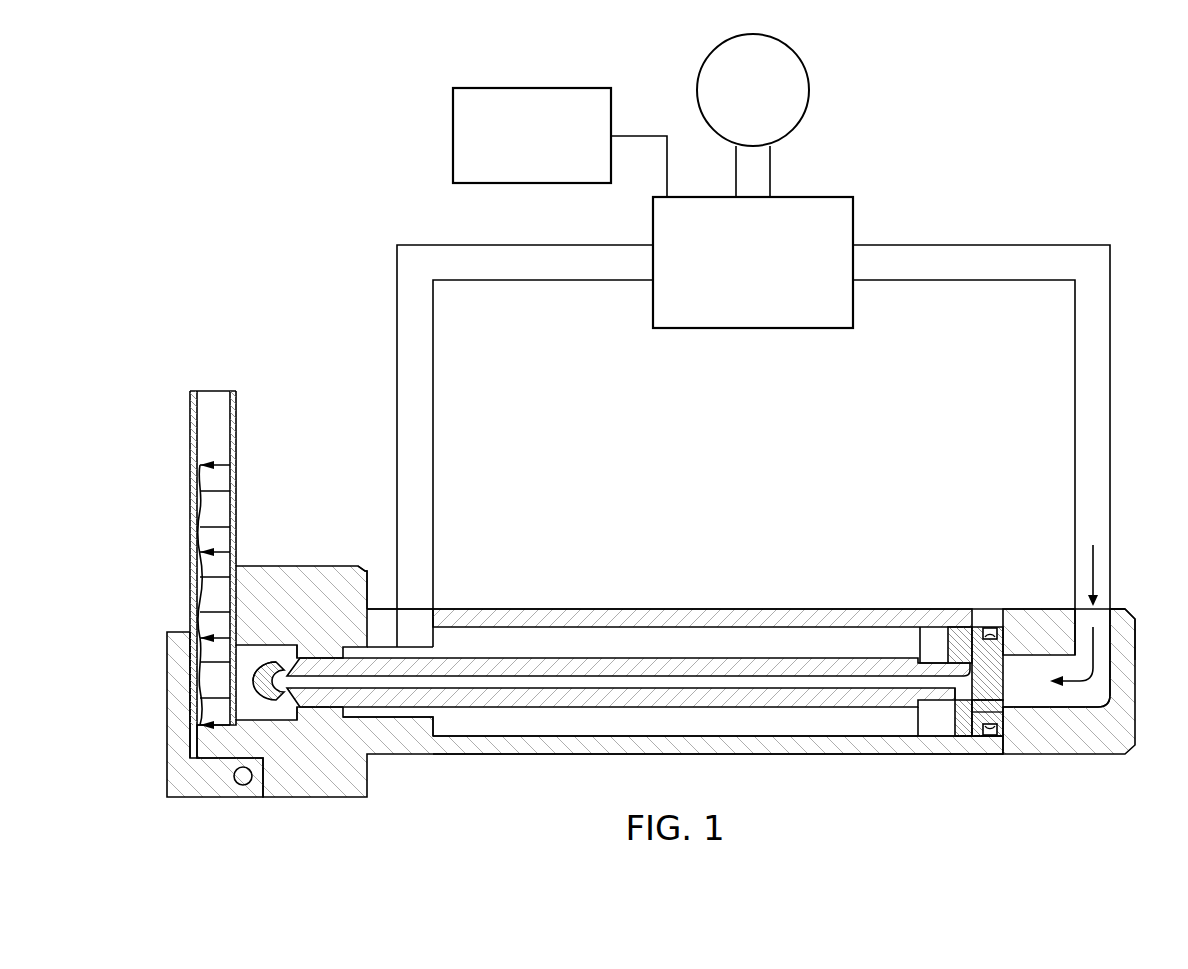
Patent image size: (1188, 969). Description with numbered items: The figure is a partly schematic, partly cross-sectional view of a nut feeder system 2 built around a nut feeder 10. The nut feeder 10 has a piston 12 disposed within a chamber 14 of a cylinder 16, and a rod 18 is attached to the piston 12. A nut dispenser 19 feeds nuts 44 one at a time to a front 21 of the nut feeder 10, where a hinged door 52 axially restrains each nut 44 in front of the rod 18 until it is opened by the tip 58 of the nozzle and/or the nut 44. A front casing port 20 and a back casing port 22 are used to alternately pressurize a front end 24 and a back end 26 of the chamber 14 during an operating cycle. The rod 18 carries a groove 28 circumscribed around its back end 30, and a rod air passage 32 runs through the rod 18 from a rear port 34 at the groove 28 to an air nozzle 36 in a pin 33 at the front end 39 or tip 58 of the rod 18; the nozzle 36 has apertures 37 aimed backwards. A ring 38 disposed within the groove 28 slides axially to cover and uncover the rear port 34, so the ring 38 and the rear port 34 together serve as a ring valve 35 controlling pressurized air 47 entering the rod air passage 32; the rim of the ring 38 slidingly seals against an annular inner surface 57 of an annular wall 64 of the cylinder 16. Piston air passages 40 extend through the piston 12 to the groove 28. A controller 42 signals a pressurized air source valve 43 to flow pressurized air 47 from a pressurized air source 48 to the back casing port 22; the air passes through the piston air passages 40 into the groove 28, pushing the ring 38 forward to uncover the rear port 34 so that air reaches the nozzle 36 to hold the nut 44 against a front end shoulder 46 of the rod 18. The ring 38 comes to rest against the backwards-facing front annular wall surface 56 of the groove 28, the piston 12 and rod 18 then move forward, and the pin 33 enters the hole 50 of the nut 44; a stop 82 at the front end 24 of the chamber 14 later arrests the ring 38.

The nut feeder system 2 is at (298, 320).
The nut feeder 10 is at (172, 820).
The piston 12 is at (1020, 640).
The chamber 14 is at (665, 645).
The cylinder 16 is at (573, 613).
The rod 18 is at (744, 712).
The nut dispenser 19 is at (238, 454).
The front casing port 20 is at (424, 617).
The front 21 is at (266, 566).
The back casing port 22 is at (1100, 618).
The front end 24 is at (446, 632).
The back end 26 is at (1004, 728).
The groove 28 is at (920, 727).
The back end 30 is at (975, 660).
The rod air passage 32 is at (677, 684).
The pin 33 is at (302, 650).
The rear port 34 is at (968, 689).
The ring valve 35 is at (960, 618).
The air nozzle 36 is at (272, 700).
The apertures 37 is at (284, 661).
The ring 38 is at (963, 730).
The front end 39 is at (340, 648).
The piston air passages 40 is at (992, 708).
The controller 42 is at (452, 136).
The pressurized air source valve 43 is at (758, 328).
The nut 44 is at (212, 714).
The front end shoulder 46 is at (352, 722).
The pressurized air 47 is at (1111, 535).
The pressurized air source 48 is at (703, 58).
The hole 50 is at (212, 681).
The hinged door 52 is at (176, 642).
The front annular wall surface 56 is at (922, 655).
The annular inner surface 57 is at (847, 632).
The tip 58 is at (318, 712).
The annular wall 64 is at (790, 630).
The stop 82 is at (440, 724).